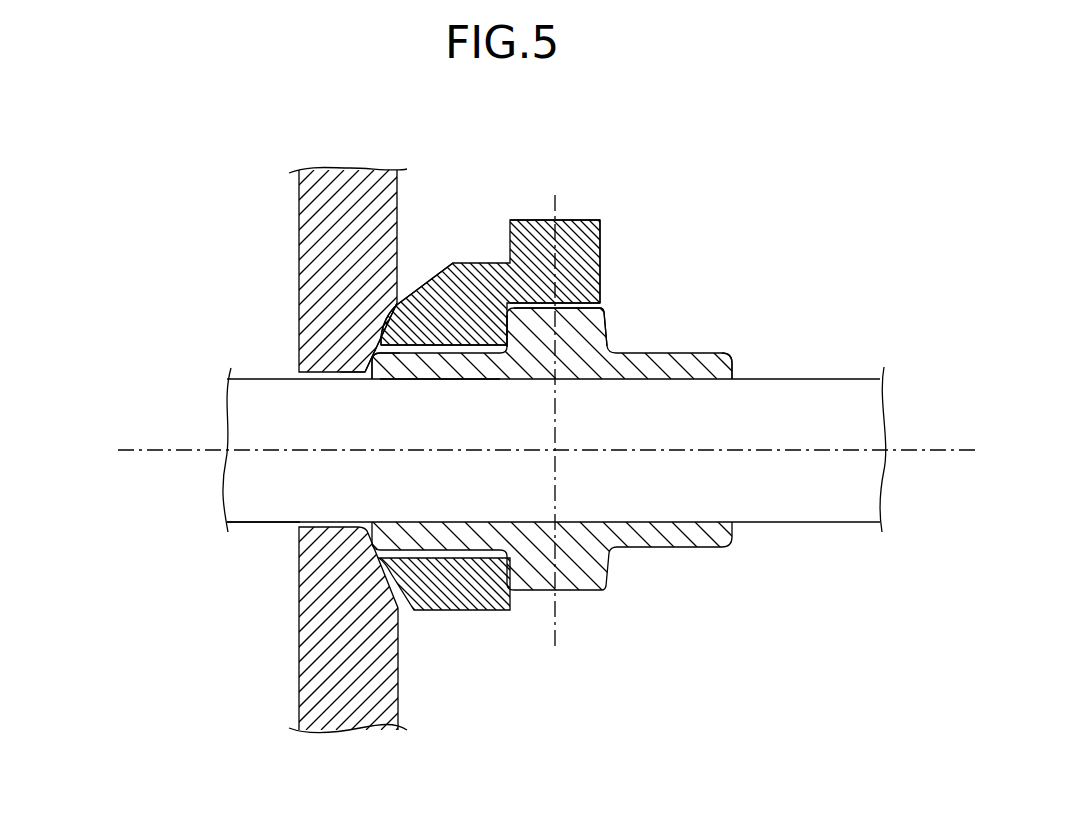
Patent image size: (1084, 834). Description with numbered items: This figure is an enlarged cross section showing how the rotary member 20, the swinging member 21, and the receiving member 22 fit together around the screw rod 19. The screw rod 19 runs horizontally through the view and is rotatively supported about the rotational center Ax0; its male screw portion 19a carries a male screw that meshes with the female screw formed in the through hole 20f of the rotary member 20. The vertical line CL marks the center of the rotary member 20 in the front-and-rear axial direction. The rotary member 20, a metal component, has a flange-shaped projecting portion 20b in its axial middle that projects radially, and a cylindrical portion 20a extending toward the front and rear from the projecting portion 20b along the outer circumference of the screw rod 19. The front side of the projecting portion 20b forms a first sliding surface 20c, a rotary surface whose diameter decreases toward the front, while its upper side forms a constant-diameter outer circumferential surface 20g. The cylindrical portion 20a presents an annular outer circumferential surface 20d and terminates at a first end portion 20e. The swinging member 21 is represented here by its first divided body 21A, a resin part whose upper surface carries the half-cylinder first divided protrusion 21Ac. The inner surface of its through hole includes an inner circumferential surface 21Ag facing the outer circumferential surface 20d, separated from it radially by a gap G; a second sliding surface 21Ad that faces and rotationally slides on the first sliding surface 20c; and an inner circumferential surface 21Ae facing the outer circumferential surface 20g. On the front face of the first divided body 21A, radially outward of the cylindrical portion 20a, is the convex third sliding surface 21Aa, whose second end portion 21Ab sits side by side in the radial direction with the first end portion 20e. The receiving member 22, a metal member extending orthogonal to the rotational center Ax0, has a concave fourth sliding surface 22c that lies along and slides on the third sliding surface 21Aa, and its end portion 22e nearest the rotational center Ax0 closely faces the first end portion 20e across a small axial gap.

The screw rod 19 is at (823, 500).
The male screw portion 19a is at (250, 523).
The rotary member 20 is at (706, 353).
The cylindrical portion 20a is at (717, 367).
The projecting portion 20b is at (577, 343).
The first sliding surface 20c is at (507, 338).
The outer circumferential surface 20d is at (393, 310).
The first end portion 20e is at (377, 380).
The through hole 20f is at (432, 380).
The outer circumferential surface 20g is at (575, 310).
The swinging member 21 is at (459, 359).
The first divided body 21A is at (497, 263).
The third sliding surface 21Aa is at (410, 292).
The second end portion 21Ab is at (378, 338).
The first divided protrusion 21Ac is at (542, 243).
The second sliding surface 21Ad is at (532, 308).
The inner circumferential surface 21Ae is at (573, 328).
The inner circumferential surface 21Ag is at (480, 347).
The receiving member 22 is at (318, 208).
The fourth sliding surface 22c is at (370, 362).
The end portion 22e is at (370, 372).
The gap G is at (457, 350).
The rotational center Ax0 is at (511, 420).
The center of the axial direction CL is at (555, 444).